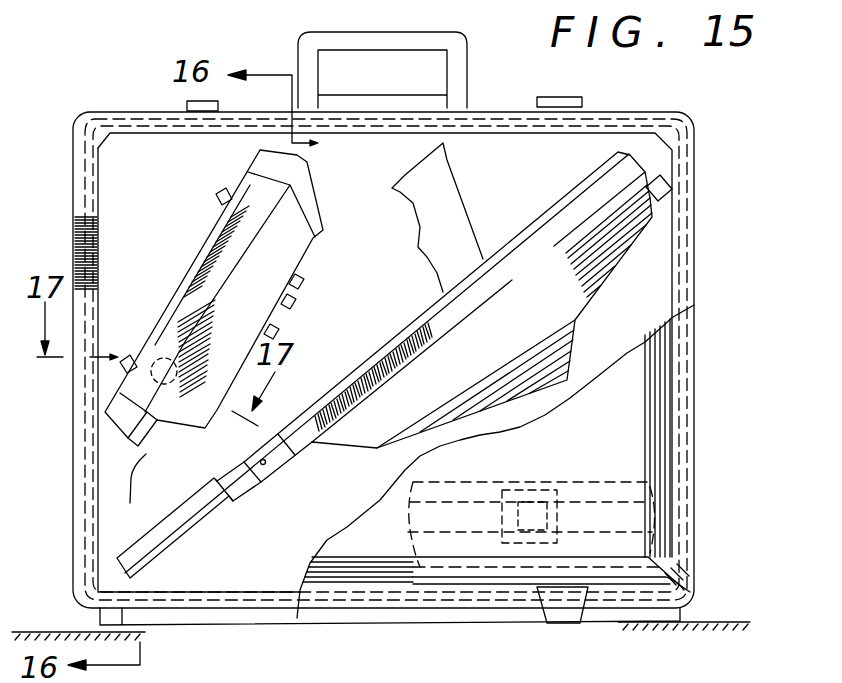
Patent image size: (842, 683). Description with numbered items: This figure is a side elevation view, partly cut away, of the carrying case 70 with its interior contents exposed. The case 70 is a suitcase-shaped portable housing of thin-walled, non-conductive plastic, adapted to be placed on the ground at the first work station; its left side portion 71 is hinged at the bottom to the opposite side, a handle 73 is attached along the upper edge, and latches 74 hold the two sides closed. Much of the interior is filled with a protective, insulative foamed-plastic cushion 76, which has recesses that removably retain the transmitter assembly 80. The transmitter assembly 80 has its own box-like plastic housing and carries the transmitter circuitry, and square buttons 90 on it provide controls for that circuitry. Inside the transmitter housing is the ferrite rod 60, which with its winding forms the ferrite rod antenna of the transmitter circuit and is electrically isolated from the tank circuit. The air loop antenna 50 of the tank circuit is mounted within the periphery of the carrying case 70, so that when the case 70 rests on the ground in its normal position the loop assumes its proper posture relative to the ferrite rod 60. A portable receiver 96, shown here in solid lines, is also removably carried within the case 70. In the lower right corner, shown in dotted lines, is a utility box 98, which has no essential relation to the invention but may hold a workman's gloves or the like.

The loop antenna 50 is at (499, 106).
The ferrite rod 60 is at (158, 356).
The case 70 is at (704, 256).
The left side portion 71 is at (625, 443).
The handle 73 is at (299, 40).
The latches 74 is at (186, 104).
The right-hand cushion 76 is at (153, 183).
The transmitter assembly 80 is at (322, 247).
The square buttons 90 is at (297, 303).
The portable receiver 96 is at (394, 365).
The utility box 98 is at (488, 472).